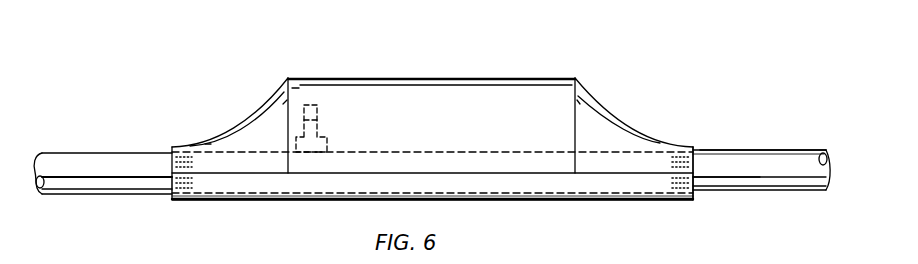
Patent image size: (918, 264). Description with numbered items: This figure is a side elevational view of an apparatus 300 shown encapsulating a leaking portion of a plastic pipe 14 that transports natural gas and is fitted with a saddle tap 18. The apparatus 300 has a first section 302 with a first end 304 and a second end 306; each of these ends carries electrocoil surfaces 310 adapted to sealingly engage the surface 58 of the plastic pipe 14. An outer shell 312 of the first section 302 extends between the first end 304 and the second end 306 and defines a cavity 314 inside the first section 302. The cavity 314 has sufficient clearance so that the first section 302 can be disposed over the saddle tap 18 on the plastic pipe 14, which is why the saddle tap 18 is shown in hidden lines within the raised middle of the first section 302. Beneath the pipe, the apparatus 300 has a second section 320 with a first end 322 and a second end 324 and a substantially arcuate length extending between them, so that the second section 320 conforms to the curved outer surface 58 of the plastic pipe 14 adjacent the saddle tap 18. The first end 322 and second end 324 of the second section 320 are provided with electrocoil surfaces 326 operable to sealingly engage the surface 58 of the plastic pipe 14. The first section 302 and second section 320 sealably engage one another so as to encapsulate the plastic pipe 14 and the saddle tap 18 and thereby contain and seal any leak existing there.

The apparatus 300 is at (338, 60).
The first section 302 is at (592, 103).
The first end 304 is at (178, 147).
The second end 306 is at (693, 147).
The electrocoil surfaces 310 is at (187, 157).
The outer shell 312 is at (398, 79).
The cavity 314 is at (478, 96).
The second section 320 is at (306, 194).
The first end 322 is at (168, 184).
The second end 324 is at (695, 181).
The electrocoil surfaces 326 is at (190, 196).
The plastic pipe 14 is at (764, 157).
The surface 58 is at (800, 148).
The saddle tap 18 is at (318, 130).